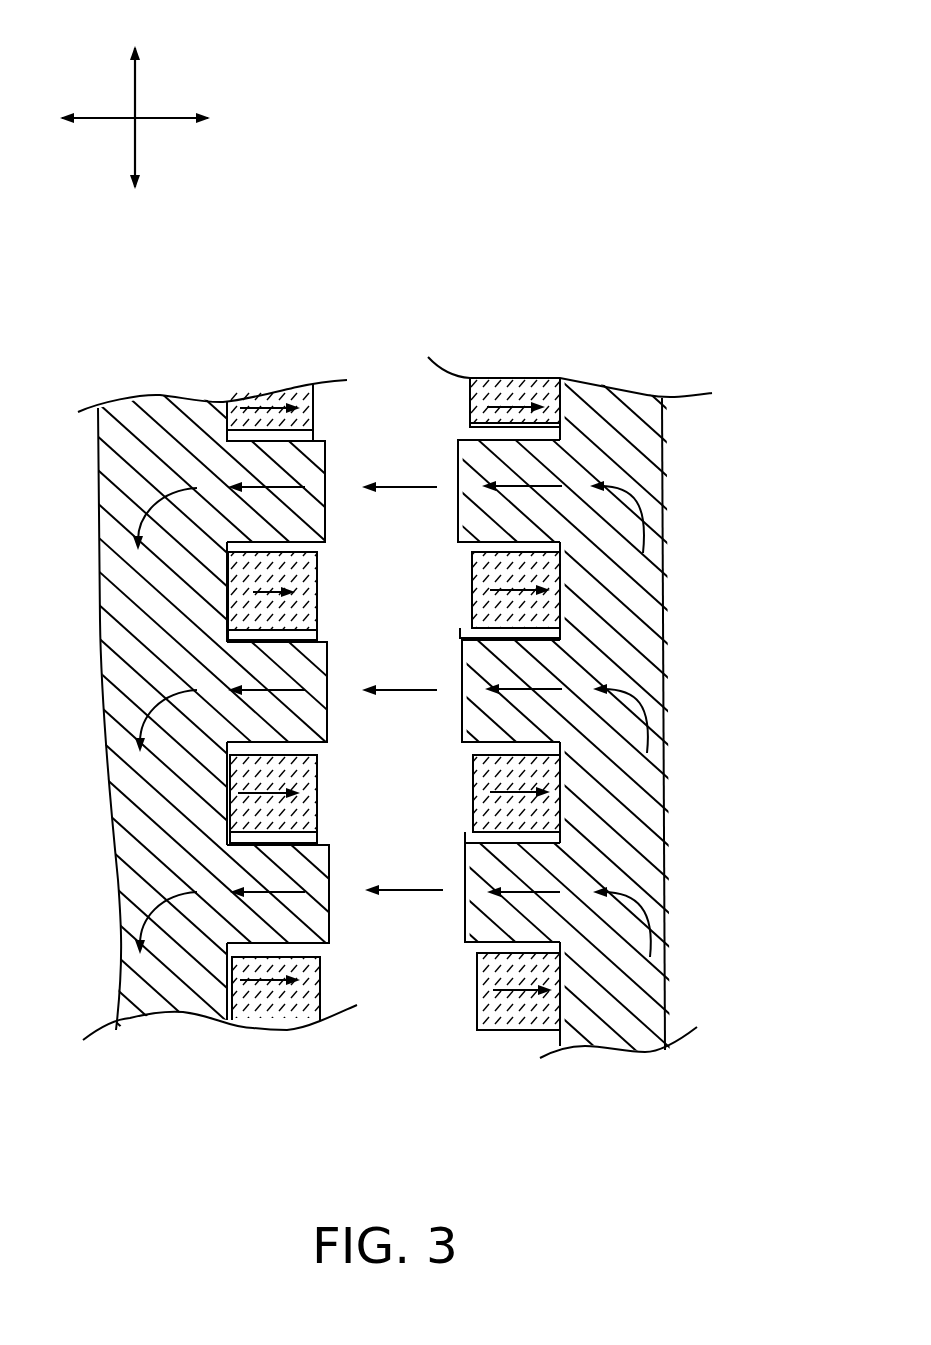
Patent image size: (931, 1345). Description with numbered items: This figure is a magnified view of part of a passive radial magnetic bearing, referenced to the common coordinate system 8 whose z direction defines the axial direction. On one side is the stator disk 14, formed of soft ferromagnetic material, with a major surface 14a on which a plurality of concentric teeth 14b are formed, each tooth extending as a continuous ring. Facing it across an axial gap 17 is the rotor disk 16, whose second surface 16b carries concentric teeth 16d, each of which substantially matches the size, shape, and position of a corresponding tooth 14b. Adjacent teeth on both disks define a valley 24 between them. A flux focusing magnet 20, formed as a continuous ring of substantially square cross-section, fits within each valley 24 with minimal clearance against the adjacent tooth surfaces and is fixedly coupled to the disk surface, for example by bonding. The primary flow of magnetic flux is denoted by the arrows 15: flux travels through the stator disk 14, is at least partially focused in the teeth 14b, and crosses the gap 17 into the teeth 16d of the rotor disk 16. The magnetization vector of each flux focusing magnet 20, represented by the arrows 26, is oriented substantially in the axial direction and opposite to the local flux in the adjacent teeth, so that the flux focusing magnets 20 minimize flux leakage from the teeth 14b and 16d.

The coordinate system 8 is at (155, 98).
The stator disk 14 is at (688, 516).
The major surface 14a is at (422, 1014).
The teeth 14b is at (458, 503).
The arrows 15 is at (267, 490).
The rotor disk 16 is at (208, 368).
The second surface 16b is at (345, 425).
The teeth 16d is at (325, 497).
The axial gap 17 is at (383, 356).
The flux focusing magnets 20 is at (317, 620).
The valley 24 is at (300, 638).
The arrows 26 is at (262, 594).